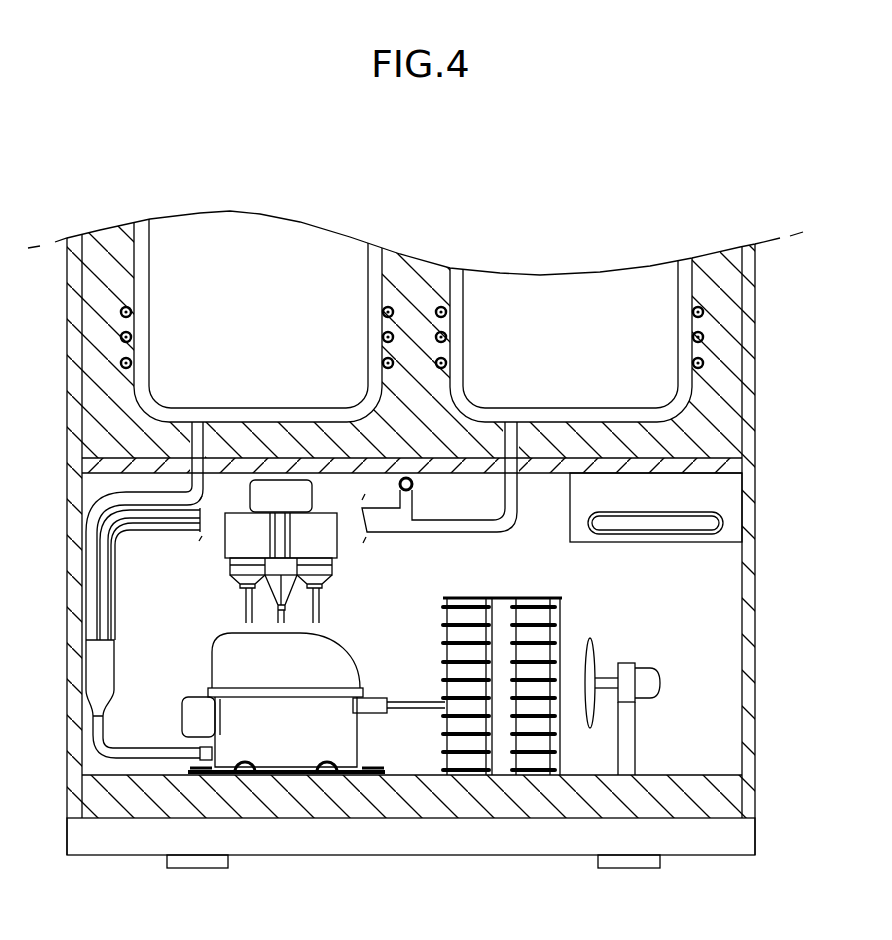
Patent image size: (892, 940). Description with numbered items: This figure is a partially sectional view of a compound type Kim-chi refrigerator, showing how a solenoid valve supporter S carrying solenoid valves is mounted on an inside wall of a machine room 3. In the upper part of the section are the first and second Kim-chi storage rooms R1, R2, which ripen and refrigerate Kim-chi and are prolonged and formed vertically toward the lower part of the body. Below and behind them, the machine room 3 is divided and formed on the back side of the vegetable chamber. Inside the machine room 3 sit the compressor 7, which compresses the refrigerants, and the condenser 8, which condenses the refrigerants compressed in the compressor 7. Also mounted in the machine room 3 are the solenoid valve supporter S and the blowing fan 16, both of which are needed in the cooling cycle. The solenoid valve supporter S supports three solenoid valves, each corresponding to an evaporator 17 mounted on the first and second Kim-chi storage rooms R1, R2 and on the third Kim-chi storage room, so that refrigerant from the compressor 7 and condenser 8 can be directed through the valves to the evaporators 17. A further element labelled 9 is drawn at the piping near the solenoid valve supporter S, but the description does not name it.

The machine room 3 is at (723, 607).
The compressor 7 is at (288, 752).
The condenser 8 is at (468, 755).
The refrigerant pipe connection block 9 is at (262, 495).
The blowing fan 16 is at (652, 687).
The evaporator 17 is at (120, 311).
The solenoid valve supporter S is at (214, 548).
The first Kim-chi storage room R1 is at (258, 320).
The second Kim-chi storage room R2 is at (571, 340).